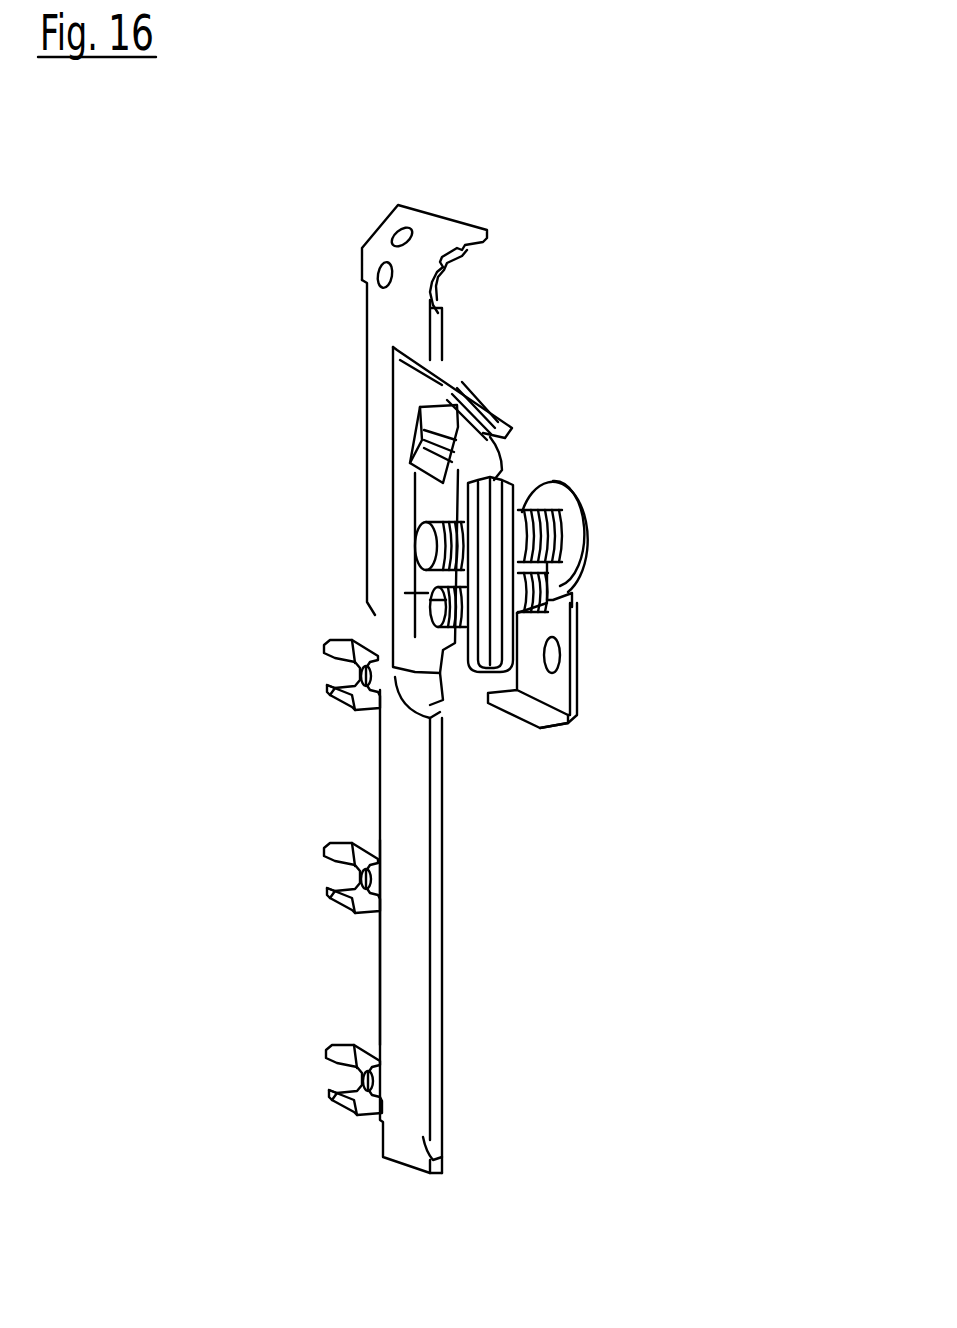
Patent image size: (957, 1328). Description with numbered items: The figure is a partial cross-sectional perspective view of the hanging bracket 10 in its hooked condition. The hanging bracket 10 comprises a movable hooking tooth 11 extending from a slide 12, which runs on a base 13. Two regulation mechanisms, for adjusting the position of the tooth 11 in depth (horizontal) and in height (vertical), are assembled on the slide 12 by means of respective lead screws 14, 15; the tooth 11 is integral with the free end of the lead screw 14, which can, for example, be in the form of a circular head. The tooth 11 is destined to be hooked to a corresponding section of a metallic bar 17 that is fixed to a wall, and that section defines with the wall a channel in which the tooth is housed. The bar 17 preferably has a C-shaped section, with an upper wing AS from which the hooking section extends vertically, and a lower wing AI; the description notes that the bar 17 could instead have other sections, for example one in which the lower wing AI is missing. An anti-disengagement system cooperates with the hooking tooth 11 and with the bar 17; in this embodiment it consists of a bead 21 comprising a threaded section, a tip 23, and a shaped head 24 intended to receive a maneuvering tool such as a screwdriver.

The hanging bracket 10 is at (243, 991).
The movable hooking tooth 11 is at (560, 490).
The slide 12 is at (460, 650).
The base 13 is at (403, 955).
The lead screw 14 is at (430, 540).
The lead screw 15 is at (413, 453).
The metallic bar 17 is at (577, 682).
The bead 21 is at (428, 590).
The tip 23 is at (553, 600).
The shaped head 24 is at (437, 612).
The upper wing AS is at (558, 608).
The lower wing AI is at (555, 725).